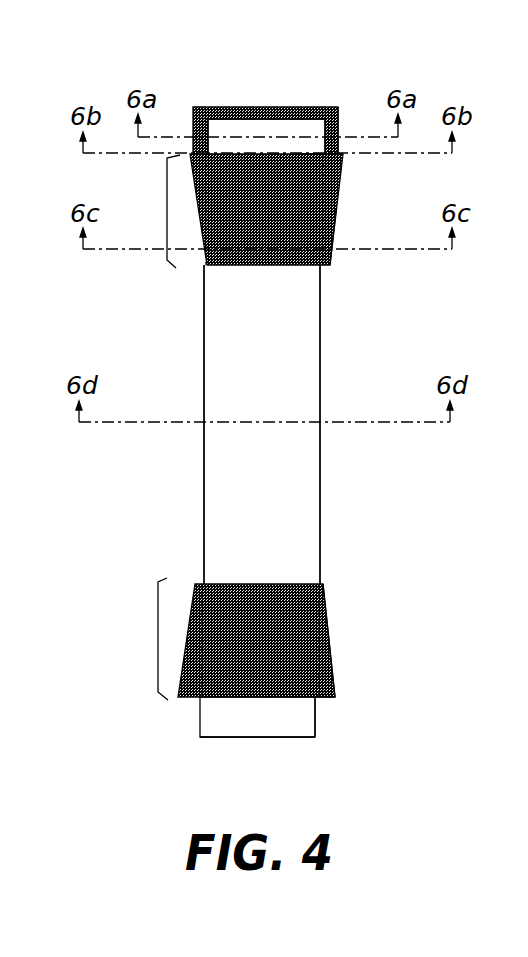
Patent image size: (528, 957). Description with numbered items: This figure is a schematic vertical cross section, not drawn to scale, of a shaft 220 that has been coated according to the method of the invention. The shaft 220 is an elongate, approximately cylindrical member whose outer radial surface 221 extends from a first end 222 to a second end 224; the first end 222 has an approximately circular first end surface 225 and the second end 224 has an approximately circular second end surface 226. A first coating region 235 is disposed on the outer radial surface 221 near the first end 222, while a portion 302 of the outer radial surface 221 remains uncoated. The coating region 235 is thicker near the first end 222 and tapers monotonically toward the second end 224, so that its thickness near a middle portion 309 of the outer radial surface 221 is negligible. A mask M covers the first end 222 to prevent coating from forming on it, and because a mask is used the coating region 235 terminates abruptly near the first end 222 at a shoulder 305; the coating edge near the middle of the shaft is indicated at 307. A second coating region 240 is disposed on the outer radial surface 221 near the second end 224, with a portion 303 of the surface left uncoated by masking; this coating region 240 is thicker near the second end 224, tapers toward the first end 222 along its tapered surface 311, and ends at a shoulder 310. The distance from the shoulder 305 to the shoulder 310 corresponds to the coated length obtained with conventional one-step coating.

The uncoated portion of outer radial surface 302 is at (193, 125).
The first end surface 225 is at (220, 121).
The mask M is at (341, 107).
The first coating region 235 is at (167, 210).
The first end 222 is at (303, 126).
The shoulder 305 is at (343, 157).
The transition edge 307 is at (331, 250).
The shaft 220 is at (364, 546).
The outer radial surface 221 is at (204, 497).
The middle portion 309 is at (321, 426).
The second coating region 240 is at (158, 643).
The tapered surface 311 is at (333, 672).
The shoulder 310 is at (324, 699).
The uncoated portion of outer radial surface 303 is at (200, 708).
The second end 224 is at (242, 745).
The second end surface 226 is at (310, 737).